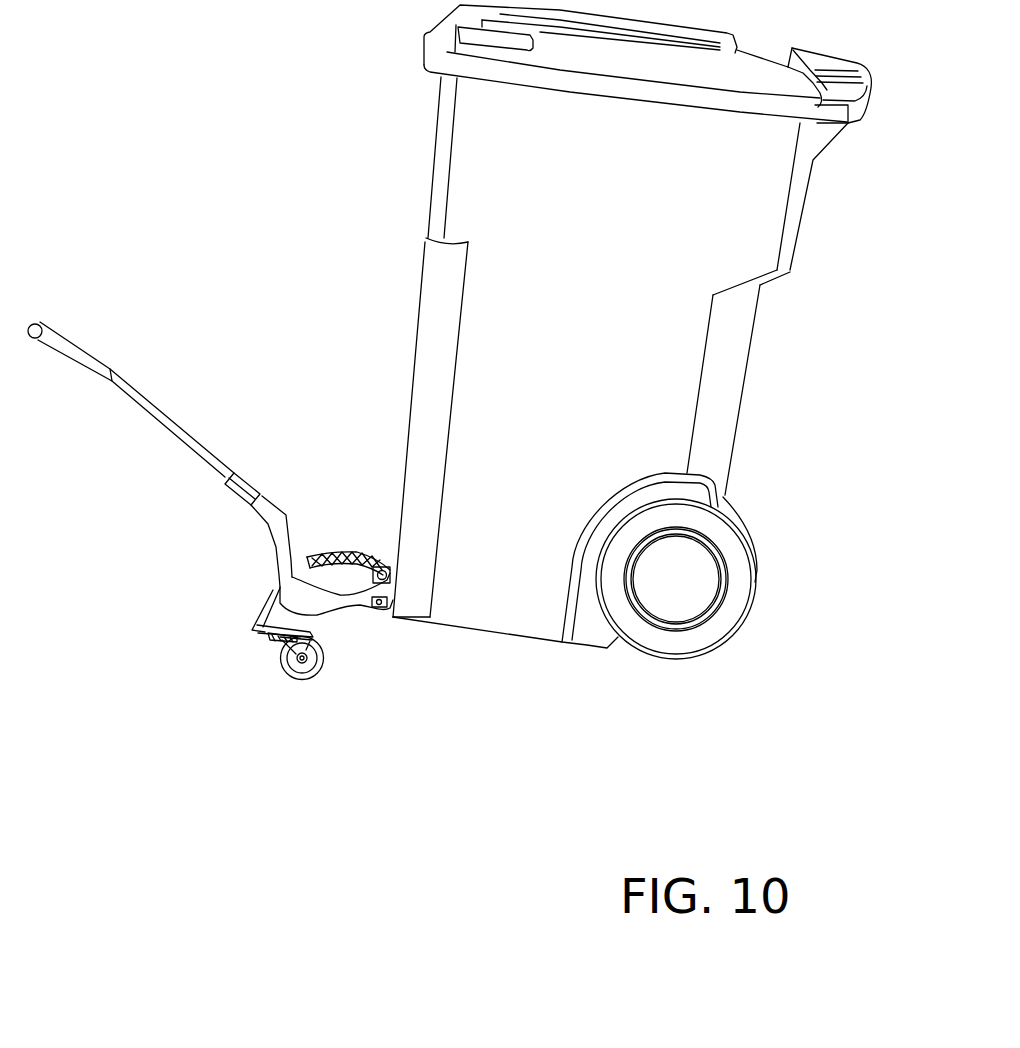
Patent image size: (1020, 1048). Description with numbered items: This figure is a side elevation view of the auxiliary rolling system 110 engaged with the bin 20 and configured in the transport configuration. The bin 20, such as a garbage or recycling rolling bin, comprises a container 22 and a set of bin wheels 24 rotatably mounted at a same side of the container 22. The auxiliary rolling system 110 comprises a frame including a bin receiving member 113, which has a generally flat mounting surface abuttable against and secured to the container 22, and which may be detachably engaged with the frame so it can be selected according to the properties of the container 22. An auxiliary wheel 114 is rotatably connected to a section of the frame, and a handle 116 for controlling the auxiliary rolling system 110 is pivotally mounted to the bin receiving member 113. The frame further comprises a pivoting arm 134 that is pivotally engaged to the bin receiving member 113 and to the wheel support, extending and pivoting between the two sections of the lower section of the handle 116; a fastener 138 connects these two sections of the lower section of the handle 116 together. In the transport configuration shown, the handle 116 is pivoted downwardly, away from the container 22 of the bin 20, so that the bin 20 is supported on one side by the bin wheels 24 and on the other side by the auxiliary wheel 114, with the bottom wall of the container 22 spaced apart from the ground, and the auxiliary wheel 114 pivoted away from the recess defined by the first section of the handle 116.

The bin 20 is at (818, 316).
The container 22 is at (720, 400).
The bin wheels 24 is at (725, 618).
The bin receiving member 113 is at (404, 621).
The auxiliary rolling system 110 is at (167, 380).
The handle 116 is at (157, 433).
The pivoting arm 134 is at (333, 553).
The third fastener 138 is at (270, 603).
The auxiliary wheel 114 is at (310, 680).